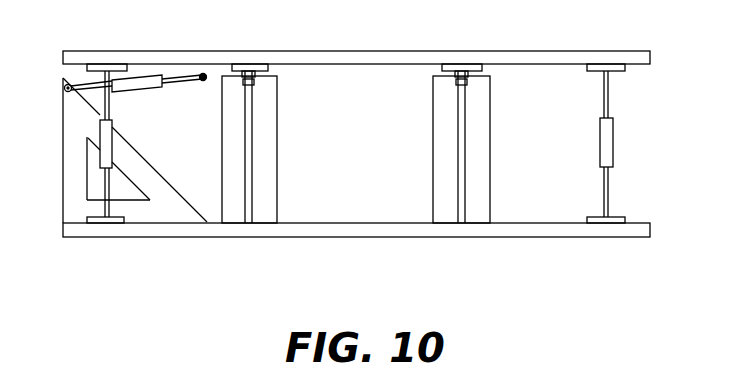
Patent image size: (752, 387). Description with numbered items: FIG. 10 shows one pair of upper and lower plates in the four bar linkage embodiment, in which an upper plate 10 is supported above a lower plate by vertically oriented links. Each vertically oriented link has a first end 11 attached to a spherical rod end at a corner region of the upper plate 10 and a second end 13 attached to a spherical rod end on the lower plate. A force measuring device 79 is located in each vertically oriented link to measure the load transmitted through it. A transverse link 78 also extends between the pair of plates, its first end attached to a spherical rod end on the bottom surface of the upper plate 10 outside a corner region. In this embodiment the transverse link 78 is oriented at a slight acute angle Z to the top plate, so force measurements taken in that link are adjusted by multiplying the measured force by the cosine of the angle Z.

The upper plate 10 is at (394, 51).
The first end 11 is at (608, 72).
The second end 13 is at (607, 219).
The transverse link 78 is at (187, 83).
The force measuring device 79 is at (614, 133).
The acute angle Z is at (167, 72).